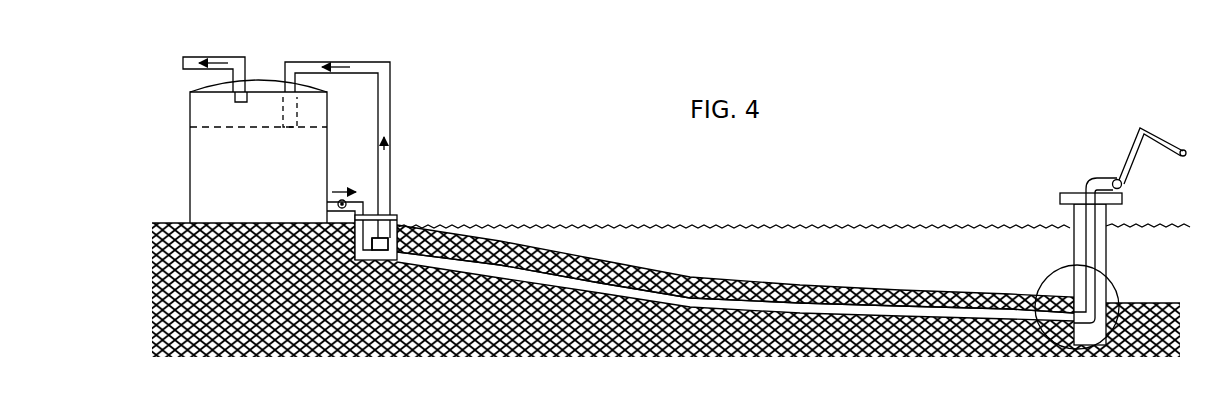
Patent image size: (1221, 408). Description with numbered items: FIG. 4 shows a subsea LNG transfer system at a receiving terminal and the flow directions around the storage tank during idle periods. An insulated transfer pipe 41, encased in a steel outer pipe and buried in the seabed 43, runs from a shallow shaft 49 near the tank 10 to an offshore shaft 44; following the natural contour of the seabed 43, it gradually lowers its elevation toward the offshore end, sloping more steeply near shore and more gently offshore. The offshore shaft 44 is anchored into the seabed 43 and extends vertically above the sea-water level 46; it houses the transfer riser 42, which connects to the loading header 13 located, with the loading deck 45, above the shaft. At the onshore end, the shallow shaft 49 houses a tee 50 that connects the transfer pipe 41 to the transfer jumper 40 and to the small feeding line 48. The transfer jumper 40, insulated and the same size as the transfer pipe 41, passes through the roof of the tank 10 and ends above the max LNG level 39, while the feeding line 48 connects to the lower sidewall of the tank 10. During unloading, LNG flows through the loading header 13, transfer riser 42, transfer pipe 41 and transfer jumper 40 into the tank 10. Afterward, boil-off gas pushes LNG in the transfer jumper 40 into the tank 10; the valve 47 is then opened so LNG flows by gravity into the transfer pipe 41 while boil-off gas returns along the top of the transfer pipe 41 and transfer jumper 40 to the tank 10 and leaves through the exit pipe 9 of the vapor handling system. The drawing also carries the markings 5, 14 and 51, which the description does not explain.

The detail circle / lower end region 5 is at (1070, 263).
The exit pipe 9 is at (246, 57).
The tank 10 is at (182, 163).
The loading header 13 is at (1122, 188).
The handle 14 is at (1165, 132).
The max LNG level 39 is at (250, 130).
The transfer jumper 40 is at (392, 92).
The transfer pipe 41 is at (744, 302).
The transfer riser 42 is at (1085, 248).
The seabed 43 is at (884, 286).
The offshore shaft 44 is at (1117, 252).
The loading deck 45 is at (1072, 195).
The sea-water level 46 is at (797, 227).
The valve 47 is at (327, 221).
The feeding line 48 is at (368, 198).
The shallow shaft 49 is at (404, 213).
The tee 50 is at (385, 247).
The ground 51 is at (666, 315).